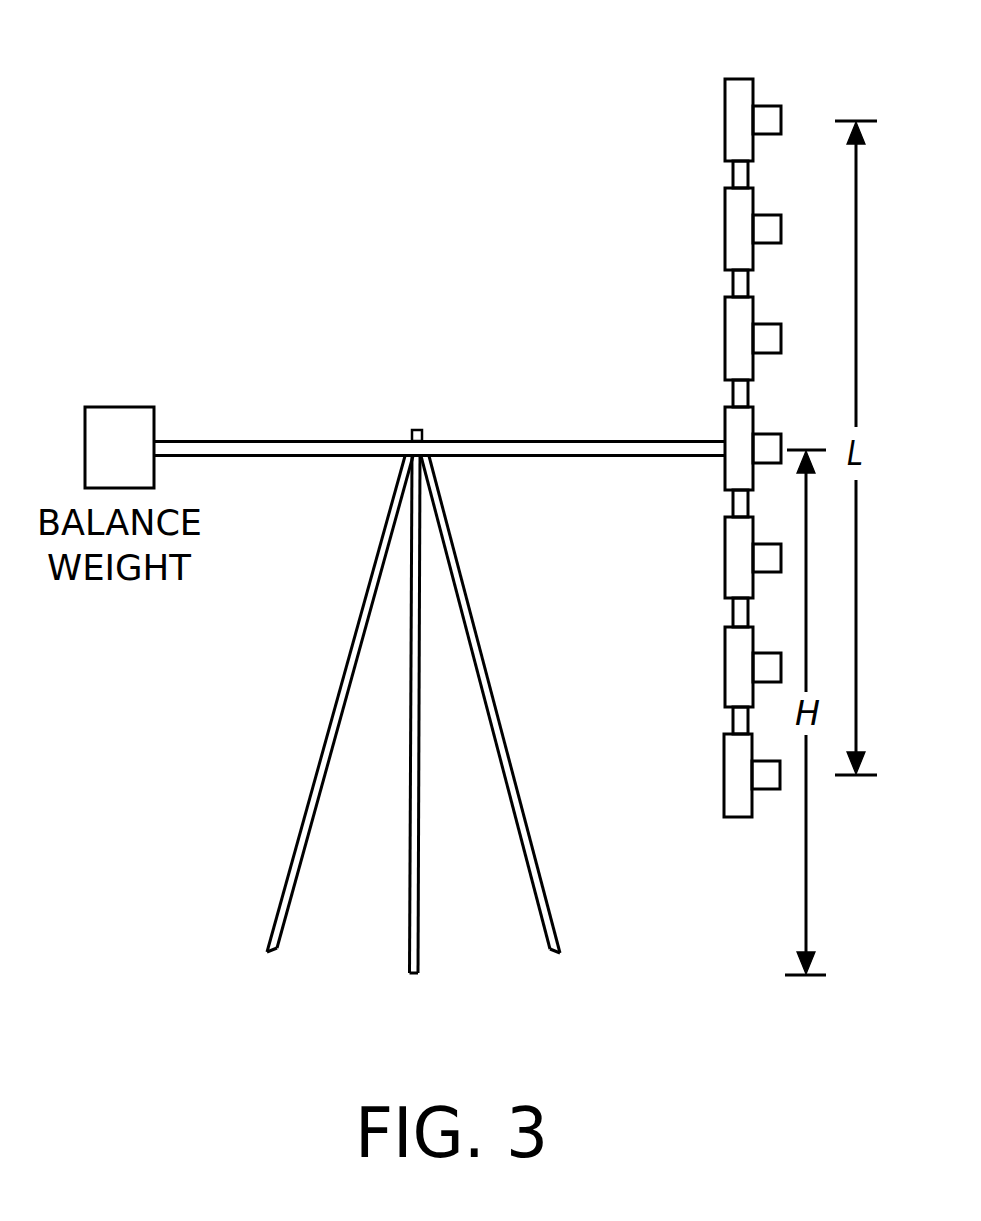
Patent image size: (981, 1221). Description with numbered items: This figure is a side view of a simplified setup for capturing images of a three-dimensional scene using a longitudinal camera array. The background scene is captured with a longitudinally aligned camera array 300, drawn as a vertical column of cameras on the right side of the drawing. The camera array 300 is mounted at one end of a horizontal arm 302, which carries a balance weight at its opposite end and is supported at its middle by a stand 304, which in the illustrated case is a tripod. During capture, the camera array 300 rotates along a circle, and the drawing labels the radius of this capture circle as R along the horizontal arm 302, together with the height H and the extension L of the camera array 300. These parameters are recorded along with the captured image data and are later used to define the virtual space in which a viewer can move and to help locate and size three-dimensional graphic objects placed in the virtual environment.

The camera array 300 is at (688, 325).
The horizontal arm 302 is at (345, 441).
The stand 304 is at (306, 812).